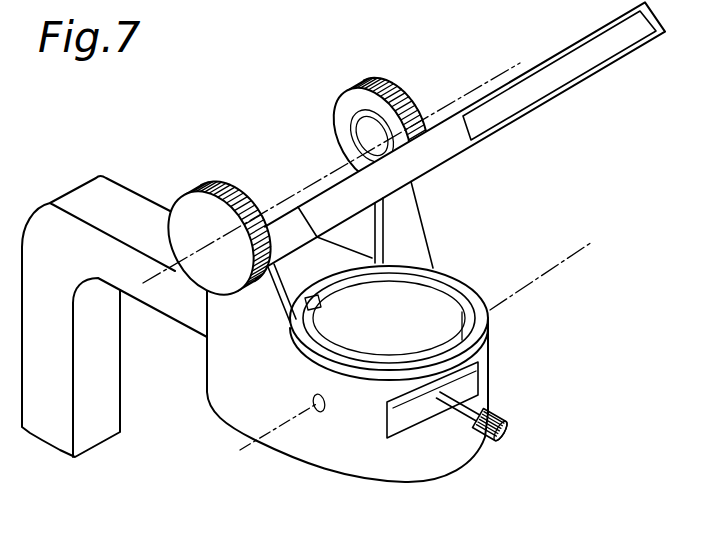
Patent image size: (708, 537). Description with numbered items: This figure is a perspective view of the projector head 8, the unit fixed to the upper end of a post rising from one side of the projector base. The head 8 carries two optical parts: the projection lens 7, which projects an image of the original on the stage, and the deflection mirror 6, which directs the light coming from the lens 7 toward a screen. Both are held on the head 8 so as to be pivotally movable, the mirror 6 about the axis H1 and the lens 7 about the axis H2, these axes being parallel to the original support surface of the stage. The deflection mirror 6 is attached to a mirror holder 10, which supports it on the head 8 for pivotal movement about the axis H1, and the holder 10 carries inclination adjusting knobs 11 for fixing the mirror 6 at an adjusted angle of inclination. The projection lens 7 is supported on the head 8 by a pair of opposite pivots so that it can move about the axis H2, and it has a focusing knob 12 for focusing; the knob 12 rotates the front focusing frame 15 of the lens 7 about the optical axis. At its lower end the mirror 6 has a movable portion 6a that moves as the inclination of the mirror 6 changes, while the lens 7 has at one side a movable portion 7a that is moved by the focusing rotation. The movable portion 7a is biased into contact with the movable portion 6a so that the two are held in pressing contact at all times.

The deflection mirror 6 is at (565, 78).
The movable portion 6a is at (325, 265).
The projection lens 7 is at (466, 315).
The movable portion 7a is at (334, 310).
The projector head 8 is at (206, 408).
The mirror holder 10 is at (567, 44).
The inclination adjusting knobs 11 is at (214, 181).
The focusing knob 12 is at (493, 413).
The front focusing frame 15 is at (319, 413).
The axis H1 is at (158, 268).
The axis H2 is at (255, 445).